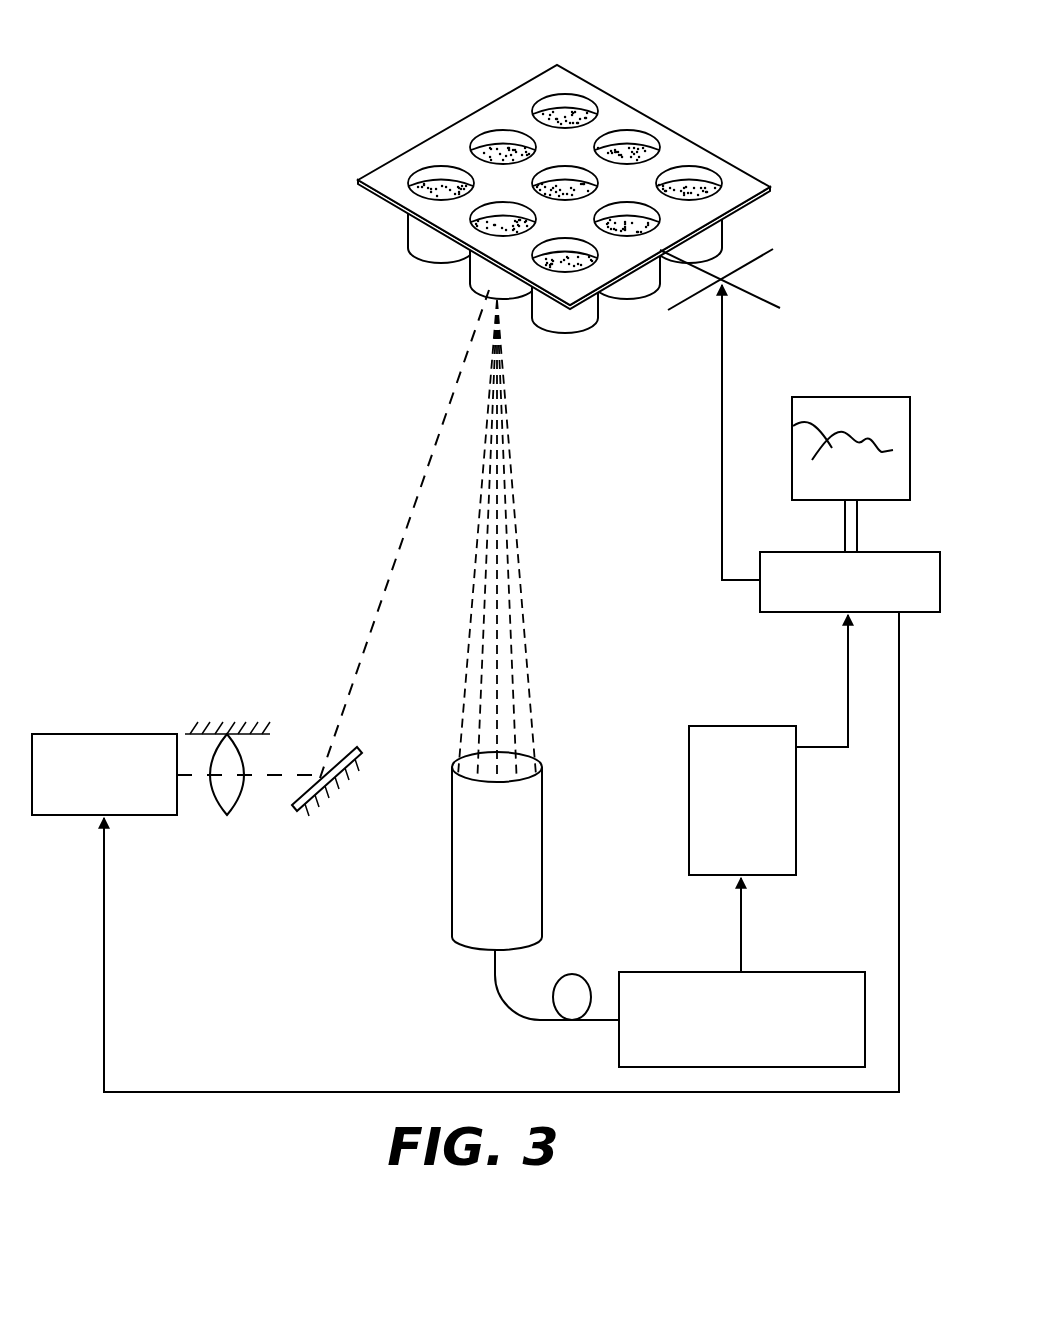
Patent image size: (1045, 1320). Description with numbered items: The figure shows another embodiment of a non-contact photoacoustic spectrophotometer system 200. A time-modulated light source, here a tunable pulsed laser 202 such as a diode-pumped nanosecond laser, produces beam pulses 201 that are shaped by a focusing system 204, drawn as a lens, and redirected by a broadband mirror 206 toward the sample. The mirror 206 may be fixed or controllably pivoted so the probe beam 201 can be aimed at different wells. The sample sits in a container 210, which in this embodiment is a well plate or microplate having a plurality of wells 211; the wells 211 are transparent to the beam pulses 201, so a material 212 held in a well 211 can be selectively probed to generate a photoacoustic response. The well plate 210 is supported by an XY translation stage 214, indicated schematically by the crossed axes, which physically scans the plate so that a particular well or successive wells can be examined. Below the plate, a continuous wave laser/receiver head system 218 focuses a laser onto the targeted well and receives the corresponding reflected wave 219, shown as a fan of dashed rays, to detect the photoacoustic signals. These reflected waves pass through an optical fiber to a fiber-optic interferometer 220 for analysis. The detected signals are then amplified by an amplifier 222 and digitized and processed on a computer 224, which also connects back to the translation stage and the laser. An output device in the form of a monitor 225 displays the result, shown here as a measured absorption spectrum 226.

The non-contact photoacoustic spectrophotometer system 200 is at (255, 95).
The beam pulses 201 is at (397, 562).
The tunable pulsed laser 202 is at (105, 733).
The focusing system 204 is at (222, 812).
The broadband mirror 206 is at (297, 810).
The container 210 is at (660, 127).
The wells 211 is at (440, 178).
The material 212 is at (477, 213).
The XY translation stage 214 is at (760, 270).
The continuous wave laser/receiver head system 218 is at (537, 842).
The reflected wave 219 is at (518, 557).
The fiber-optic interferometer 220 is at (800, 972).
The amplifier 222 is at (796, 821).
The computer 224 is at (887, 552).
The monitor 225 is at (871, 397).
The measured absorption spectrum 226 is at (793, 426).